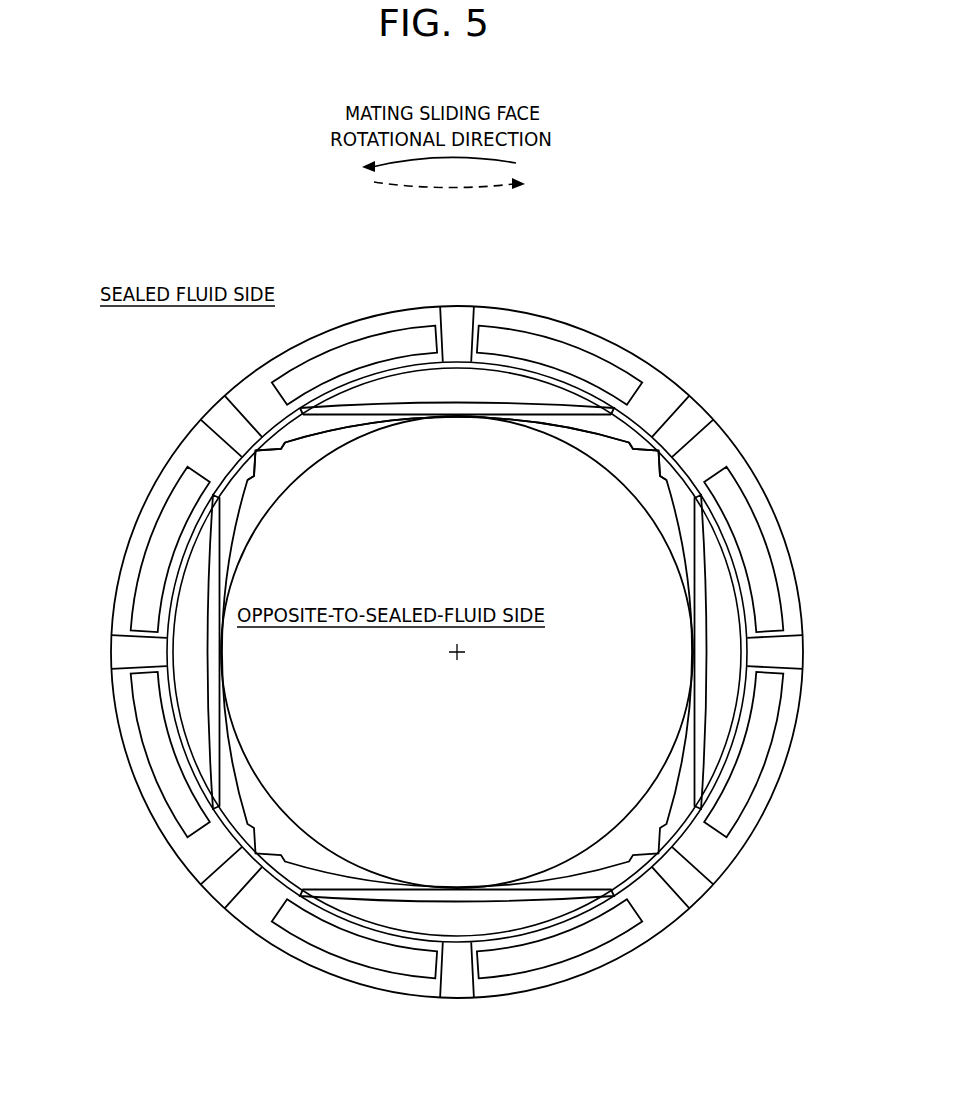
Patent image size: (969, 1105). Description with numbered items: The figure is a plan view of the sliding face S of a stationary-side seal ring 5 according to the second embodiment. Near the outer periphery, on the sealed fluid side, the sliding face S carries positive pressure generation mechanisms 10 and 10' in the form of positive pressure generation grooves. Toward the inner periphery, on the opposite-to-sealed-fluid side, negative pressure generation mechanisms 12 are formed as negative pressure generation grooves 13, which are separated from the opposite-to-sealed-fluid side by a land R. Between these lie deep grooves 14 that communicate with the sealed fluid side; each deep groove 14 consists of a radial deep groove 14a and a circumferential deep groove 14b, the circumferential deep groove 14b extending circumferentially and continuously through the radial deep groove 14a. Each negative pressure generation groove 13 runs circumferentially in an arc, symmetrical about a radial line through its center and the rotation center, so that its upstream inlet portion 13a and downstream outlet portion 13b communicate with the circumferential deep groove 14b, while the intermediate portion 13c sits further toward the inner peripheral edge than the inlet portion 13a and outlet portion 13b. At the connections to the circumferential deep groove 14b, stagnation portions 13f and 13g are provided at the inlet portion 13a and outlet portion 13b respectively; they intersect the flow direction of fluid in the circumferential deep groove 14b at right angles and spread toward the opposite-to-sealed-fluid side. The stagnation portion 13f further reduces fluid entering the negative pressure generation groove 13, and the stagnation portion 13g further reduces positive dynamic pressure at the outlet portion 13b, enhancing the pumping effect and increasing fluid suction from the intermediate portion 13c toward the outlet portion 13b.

The stationary-side seal ring 5 is at (658, 392).
The sliding face S is at (668, 392).
The positive pressure generation mechanism 10 is at (354, 328).
The positive pressure generation mechanism 10' is at (559, 332).
The negative pressure generation mechanism 12 is at (404, 424).
The negative pressure generation groove 13 is at (430, 418).
The inlet portion 13a is at (593, 425).
The outlet portion 13b is at (318, 440).
The intermediate portion 13c is at (473, 408).
The stagnation portion 13f is at (625, 438).
The stagnation portion 13g is at (282, 437).
The deep groove 14 is at (463, 250).
The radial deep groove 14a is at (457, 325).
The circumferential deep groove 14b is at (517, 368).
The land R is at (440, 387).